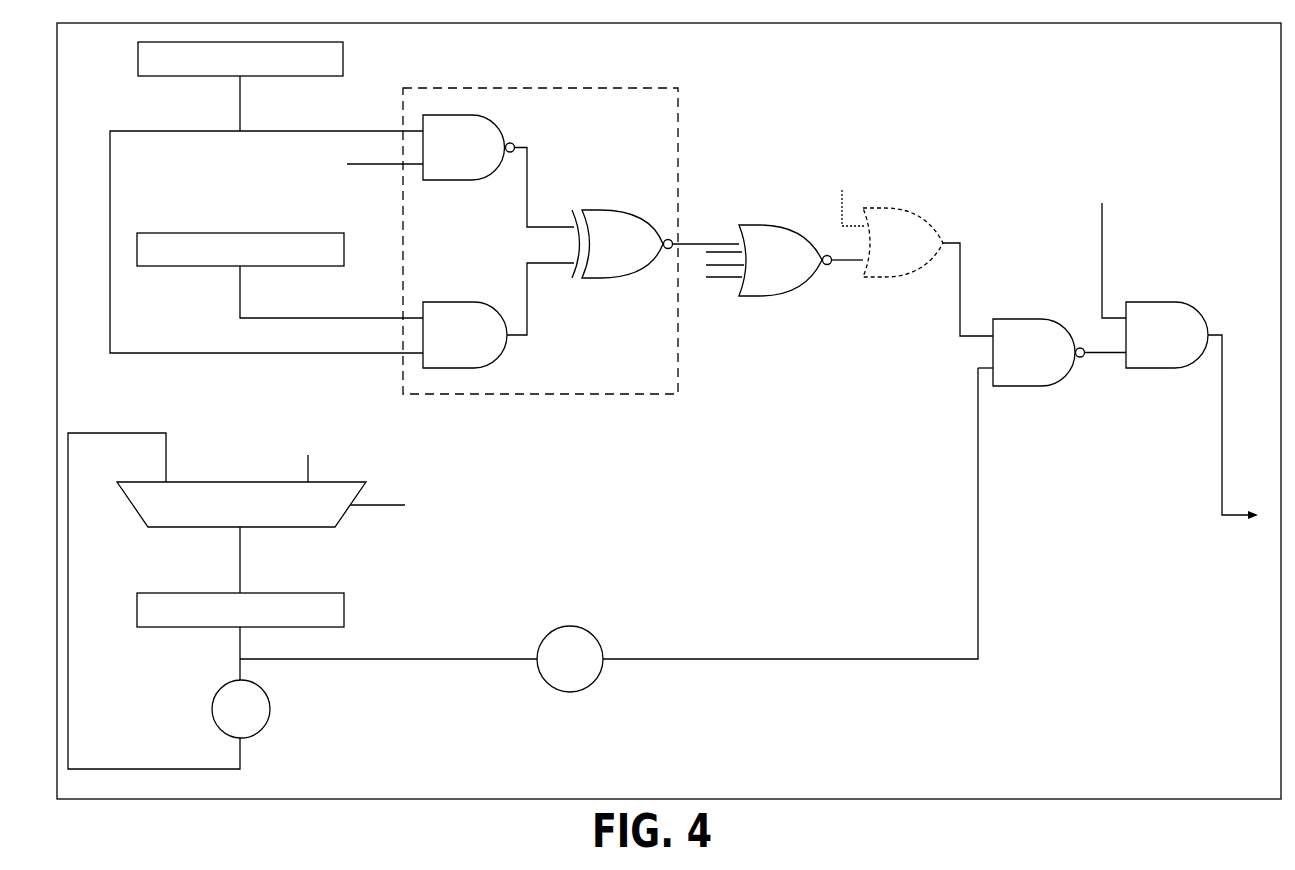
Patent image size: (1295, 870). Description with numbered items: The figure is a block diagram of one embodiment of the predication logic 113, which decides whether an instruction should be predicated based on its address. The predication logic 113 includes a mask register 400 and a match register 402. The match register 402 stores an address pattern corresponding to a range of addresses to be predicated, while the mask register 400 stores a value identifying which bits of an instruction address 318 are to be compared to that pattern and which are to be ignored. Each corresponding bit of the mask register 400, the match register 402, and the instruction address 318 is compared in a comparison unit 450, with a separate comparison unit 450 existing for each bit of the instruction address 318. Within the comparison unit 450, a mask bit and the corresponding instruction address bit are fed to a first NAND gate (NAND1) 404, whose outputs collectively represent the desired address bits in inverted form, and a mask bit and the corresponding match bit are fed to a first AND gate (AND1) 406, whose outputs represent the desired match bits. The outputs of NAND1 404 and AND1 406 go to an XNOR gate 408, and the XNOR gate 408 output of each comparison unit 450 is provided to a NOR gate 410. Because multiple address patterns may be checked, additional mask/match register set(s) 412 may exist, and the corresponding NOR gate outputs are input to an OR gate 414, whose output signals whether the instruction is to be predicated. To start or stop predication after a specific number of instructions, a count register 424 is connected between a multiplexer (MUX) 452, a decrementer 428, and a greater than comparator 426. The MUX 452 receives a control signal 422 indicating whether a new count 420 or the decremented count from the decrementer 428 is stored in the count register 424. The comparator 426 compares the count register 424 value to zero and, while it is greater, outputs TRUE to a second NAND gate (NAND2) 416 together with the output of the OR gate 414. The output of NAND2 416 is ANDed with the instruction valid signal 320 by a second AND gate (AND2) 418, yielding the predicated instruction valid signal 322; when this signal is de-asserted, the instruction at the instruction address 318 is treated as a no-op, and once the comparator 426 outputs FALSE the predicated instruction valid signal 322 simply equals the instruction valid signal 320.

The predication logic 113 is at (1118, 23).
The instruction address 318 is at (142, 165).
The instruction valid signal 320 is at (1150, 162).
The predicated instruction valid signal 322 is at (1142, 517).
The mask register 400 is at (138, 63).
The match register 402 is at (137, 268).
The first NAND gate (NAND1) 404 is at (487, 117).
The first AND gate (AND1) 406 is at (440, 302).
The XNOR gate 408 is at (588, 210).
The NOR gate 410 is at (748, 225).
The mask/match register set(s) 412 is at (903, 130).
The OR gate 414 is at (897, 208).
The second NAND gate (NAND2) 416 is at (999, 319).
The second AND gate (AND2) 418 is at (1133, 302).
The new count 420 is at (377, 430).
The control signal 422 is at (558, 490).
The count register 424 is at (345, 610).
The greater than comparator 426 is at (570, 627).
The decrementer 428 is at (268, 712).
The comparison unit 450 is at (680, 378).
The multiplexer (MUX) 452 is at (187, 528).